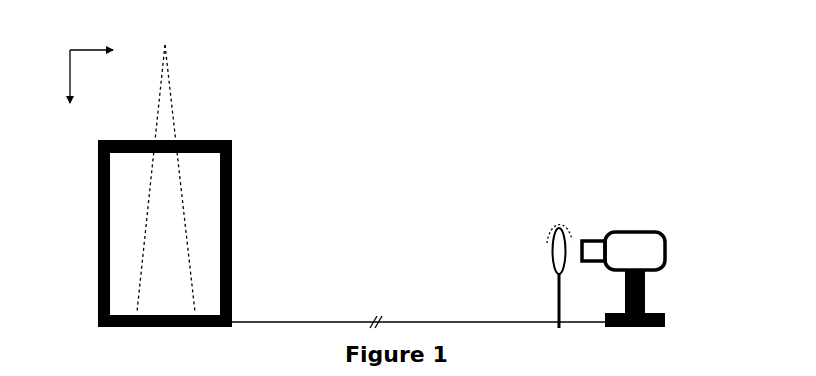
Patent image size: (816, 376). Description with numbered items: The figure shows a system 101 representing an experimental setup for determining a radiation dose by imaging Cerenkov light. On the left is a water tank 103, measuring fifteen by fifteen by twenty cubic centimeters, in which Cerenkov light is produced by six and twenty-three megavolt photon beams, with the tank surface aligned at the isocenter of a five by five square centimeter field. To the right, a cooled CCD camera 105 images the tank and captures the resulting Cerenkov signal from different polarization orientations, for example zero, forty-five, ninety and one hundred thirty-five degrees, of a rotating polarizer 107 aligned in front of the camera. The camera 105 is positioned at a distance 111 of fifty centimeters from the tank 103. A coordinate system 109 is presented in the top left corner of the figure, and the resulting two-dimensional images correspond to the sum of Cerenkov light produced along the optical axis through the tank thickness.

The system 101 is at (442, 96).
The water tank 103 is at (96, 237).
The CCD camera 105 is at (679, 253).
The polarizer 107 is at (548, 253).
The coordinate system 109 is at (69, 46).
The distance 111 is at (373, 291).